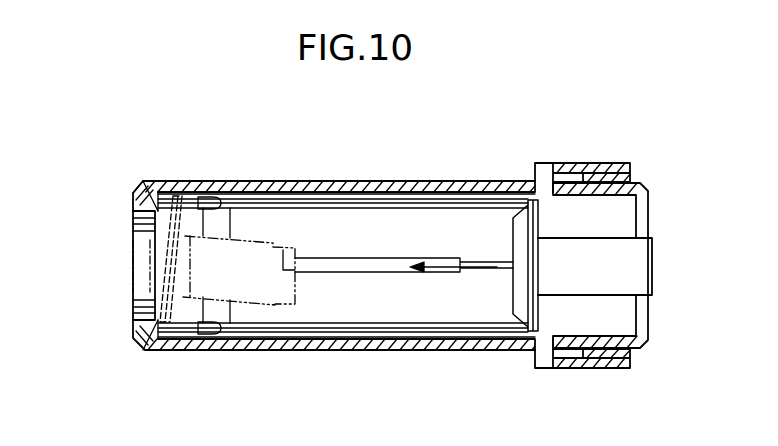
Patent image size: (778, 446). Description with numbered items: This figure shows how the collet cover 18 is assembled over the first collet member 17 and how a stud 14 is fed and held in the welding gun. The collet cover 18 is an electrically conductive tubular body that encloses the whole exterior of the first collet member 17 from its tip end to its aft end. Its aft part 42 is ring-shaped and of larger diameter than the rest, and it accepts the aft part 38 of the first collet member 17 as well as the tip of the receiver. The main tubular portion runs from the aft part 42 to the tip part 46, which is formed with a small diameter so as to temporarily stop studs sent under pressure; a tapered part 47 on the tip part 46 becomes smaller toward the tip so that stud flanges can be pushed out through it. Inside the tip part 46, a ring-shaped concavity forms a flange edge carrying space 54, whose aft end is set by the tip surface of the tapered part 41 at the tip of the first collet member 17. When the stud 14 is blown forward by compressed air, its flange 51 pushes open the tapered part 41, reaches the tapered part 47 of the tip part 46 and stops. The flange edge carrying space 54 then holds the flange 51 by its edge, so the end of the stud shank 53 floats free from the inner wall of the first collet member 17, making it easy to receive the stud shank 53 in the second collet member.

The stud 14 is at (281, 305).
The first collet member 17 is at (403, 193).
The collet cover 18 is at (346, 181).
The aft part of the first collet member 38 is at (637, 183).
The tapered part of the first collet member 41 is at (219, 201).
The aft part of the collet cover 42 is at (572, 162).
The tip part of the collet cover 46 is at (137, 195).
The tapered part of the tip part 47 is at (139, 178).
The flange 51 is at (130, 284).
The stud shank 53 is at (241, 285).
The flange edge carrying space 54 is at (160, 231).